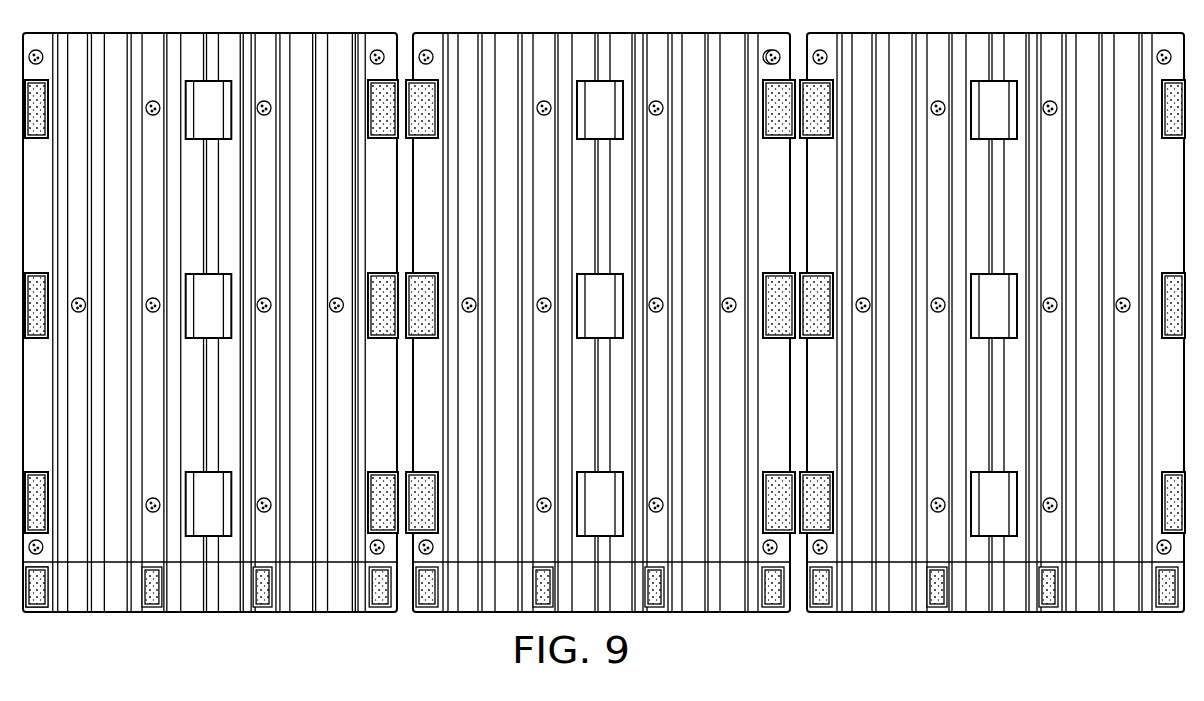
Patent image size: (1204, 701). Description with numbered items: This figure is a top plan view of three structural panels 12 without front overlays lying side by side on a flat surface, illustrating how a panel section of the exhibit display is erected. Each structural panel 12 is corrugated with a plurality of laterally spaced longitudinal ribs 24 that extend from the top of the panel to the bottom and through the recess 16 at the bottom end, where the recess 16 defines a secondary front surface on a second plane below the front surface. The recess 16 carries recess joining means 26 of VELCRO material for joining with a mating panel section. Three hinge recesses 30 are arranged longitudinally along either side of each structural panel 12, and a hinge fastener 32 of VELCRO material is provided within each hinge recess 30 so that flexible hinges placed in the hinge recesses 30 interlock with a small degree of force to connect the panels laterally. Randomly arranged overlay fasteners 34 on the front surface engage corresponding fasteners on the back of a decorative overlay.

The structural panel 12 is at (188, 19).
The recess portion 16 is at (1187, 604).
The longitudinal rib 24 is at (361, 42).
The recess joining means 26 is at (45, 608).
The hinge recess 30 is at (51, 99).
The hinge fastener 32 is at (33, 132).
The overlay fastener 34 is at (773, 48).